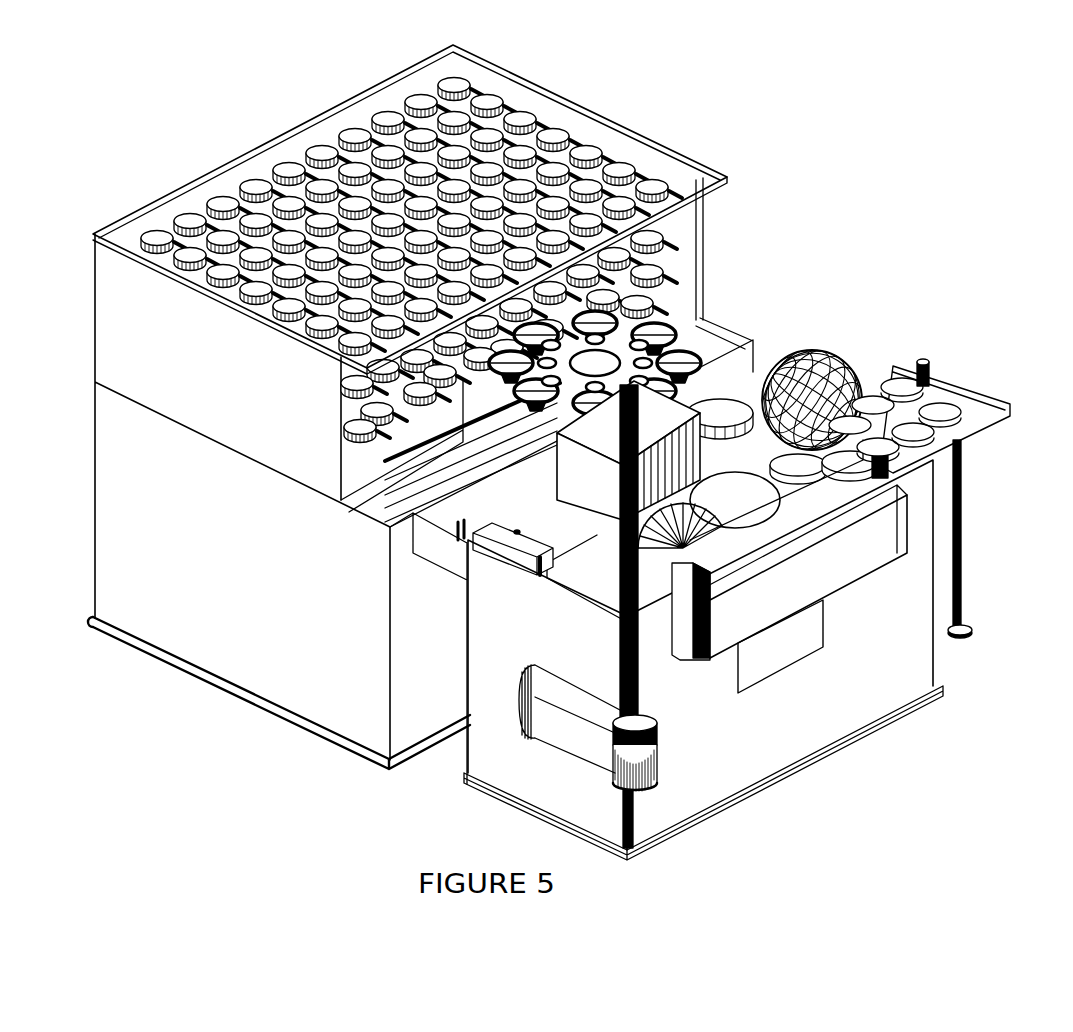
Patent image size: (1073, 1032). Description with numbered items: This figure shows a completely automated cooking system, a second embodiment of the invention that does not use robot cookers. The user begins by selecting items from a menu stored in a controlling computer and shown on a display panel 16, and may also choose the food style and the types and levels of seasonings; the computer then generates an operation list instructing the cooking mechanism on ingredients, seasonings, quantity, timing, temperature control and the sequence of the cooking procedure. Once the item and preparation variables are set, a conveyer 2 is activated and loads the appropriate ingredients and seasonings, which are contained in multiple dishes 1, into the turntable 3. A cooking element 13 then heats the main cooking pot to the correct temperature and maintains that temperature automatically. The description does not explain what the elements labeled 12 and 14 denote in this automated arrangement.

The dishes 1 is at (583, 156).
The conveyer 2 is at (708, 162).
The turntable 3 is at (704, 318).
The spherical mixing drum 12 is at (858, 362).
The cooking element 13 is at (775, 650).
The cabinet 14 is at (117, 283).
The display panel 16 is at (755, 348).